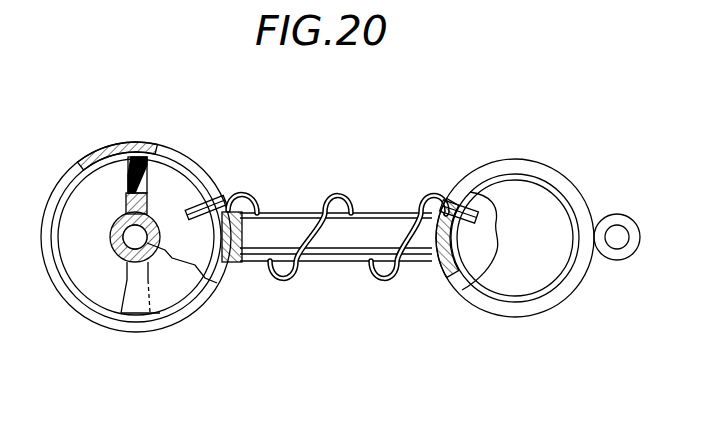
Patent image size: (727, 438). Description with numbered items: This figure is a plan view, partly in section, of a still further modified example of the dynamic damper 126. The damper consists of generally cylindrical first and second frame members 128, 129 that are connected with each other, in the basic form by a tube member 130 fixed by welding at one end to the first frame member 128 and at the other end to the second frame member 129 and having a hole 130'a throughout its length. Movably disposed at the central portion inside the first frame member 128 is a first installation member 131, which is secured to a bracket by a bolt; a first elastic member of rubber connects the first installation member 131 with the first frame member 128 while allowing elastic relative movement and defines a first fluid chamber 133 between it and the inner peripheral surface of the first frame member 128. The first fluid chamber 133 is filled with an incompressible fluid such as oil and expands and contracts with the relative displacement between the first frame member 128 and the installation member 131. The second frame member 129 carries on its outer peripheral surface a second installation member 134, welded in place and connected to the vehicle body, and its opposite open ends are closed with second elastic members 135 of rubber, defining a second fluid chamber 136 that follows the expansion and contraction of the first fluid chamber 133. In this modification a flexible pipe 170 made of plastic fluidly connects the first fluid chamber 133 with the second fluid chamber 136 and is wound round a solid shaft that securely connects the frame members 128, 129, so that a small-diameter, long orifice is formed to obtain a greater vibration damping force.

The dynamic damper 126 is at (283, 190).
The first frame member 128 is at (109, 150).
The second frame member 129 is at (492, 161).
The tube member 130 is at (336, 259).
The hole 130'a is at (228, 183).
The first installation member 131 is at (132, 184).
The first fluid chamber 133 is at (173, 173).
The second installation member 134 is at (610, 214).
The second elastic member 135 is at (542, 197).
The second fluid chamber 136 is at (466, 254).
The flexible pipe 170 is at (339, 193).